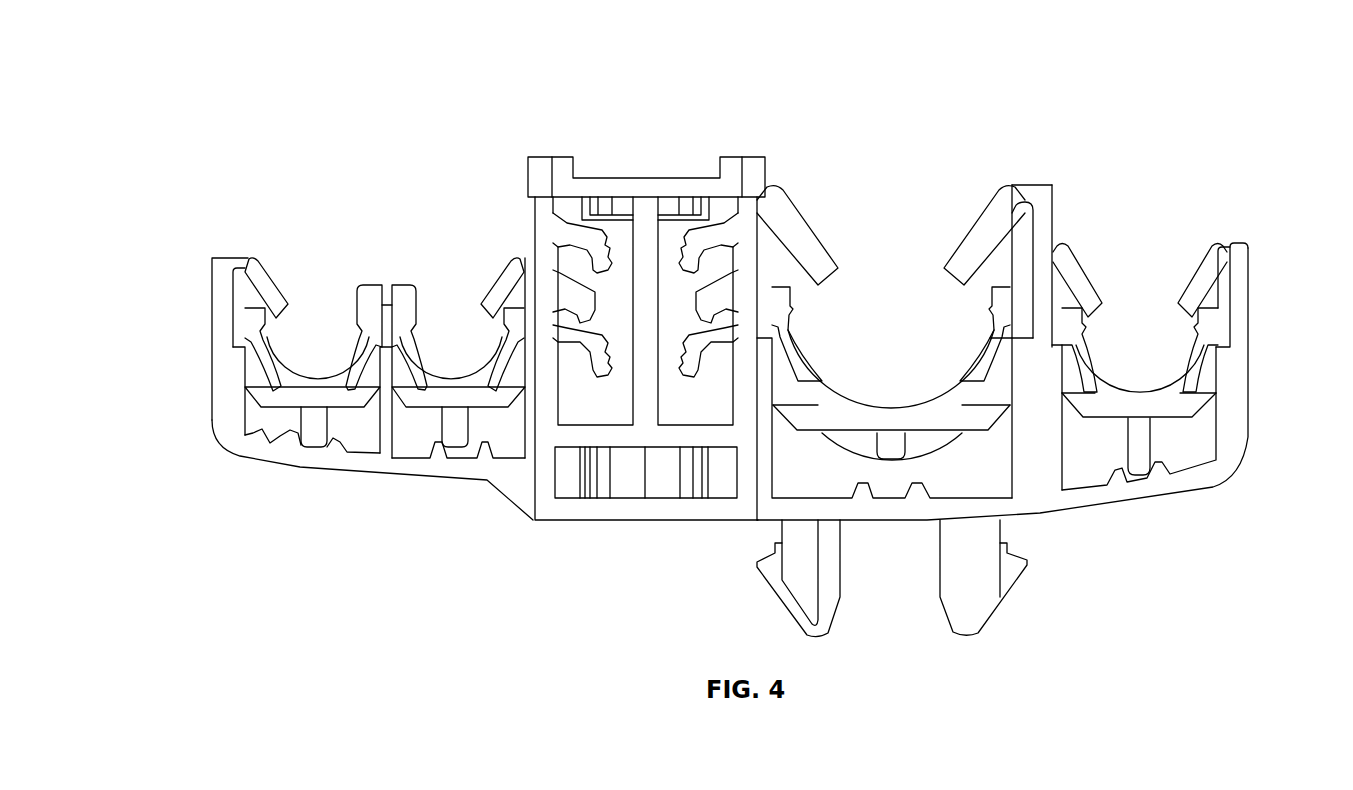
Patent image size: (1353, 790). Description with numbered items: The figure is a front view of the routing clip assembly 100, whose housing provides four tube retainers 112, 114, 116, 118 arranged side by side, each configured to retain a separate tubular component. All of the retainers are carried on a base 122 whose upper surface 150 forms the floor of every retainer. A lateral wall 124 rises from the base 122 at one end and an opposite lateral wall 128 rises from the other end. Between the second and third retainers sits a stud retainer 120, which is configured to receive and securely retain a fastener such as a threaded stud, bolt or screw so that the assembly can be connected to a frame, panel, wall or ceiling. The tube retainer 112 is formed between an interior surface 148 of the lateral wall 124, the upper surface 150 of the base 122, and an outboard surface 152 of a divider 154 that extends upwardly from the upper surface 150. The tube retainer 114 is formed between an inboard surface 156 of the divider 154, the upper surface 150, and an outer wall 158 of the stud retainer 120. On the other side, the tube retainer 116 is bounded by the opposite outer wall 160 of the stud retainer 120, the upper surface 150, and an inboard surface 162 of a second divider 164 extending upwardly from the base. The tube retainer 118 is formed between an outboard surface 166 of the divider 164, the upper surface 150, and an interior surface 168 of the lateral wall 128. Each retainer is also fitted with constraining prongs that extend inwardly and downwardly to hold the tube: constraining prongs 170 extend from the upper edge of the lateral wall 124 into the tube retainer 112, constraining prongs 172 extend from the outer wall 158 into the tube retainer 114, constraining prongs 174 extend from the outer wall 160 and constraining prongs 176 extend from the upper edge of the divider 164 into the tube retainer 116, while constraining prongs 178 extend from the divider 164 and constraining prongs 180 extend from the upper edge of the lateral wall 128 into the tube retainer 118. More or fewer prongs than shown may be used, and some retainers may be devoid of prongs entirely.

The routing clip assembly 100 is at (254, 89).
The tube retainer 112 is at (313, 268).
The tube retainer 114 is at (458, 268).
The tube retainer 116 is at (891, 222).
The tube retainer 118 is at (1137, 222).
The stud retainer 120 is at (645, 163).
The base 122 is at (340, 475).
The lateral wall 124 is at (212, 330).
The lateral wall 128 is at (1253, 336).
The interior surface 148 is at (243, 300).
The upper surface 150 is at (258, 435).
The outboard surface 152 is at (382, 372).
The divider 154 is at (378, 428).
The inboard surface 156 is at (398, 377).
The outer wall 158 is at (533, 213).
The outer wall 160 is at (757, 233).
The inboard surface 162 is at (1035, 230).
The divider 164 is at (1040, 348).
The outboard surface 166 is at (1055, 228).
The interior surface 168 is at (1222, 260).
The constraining prongs 170 is at (268, 278).
The constraining prongs 172 is at (505, 278).
The constraining prongs 174 is at (818, 240).
The constraining prongs 176 is at (962, 240).
The constraining prongs 178 is at (1088, 280).
The constraining prongs 180 is at (1188, 277).